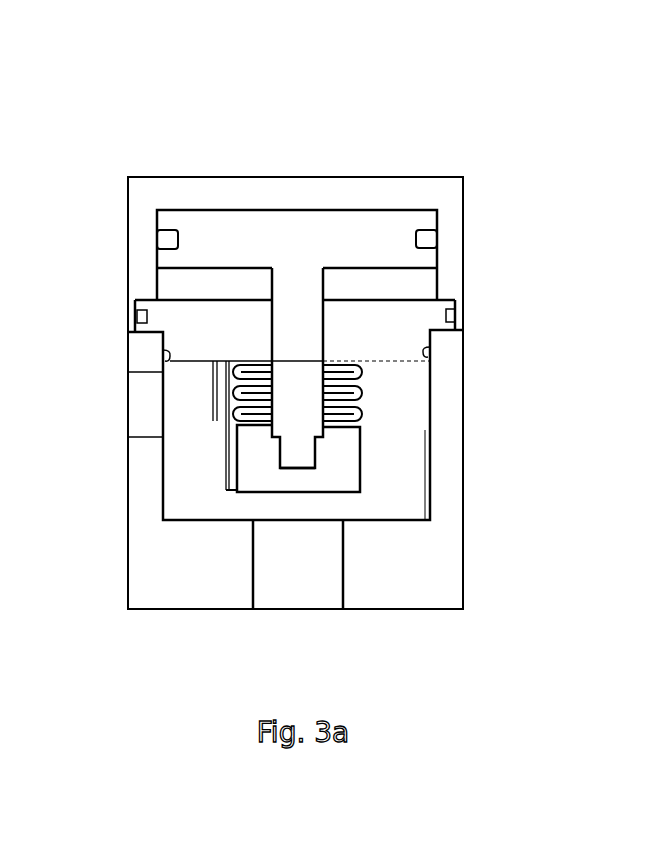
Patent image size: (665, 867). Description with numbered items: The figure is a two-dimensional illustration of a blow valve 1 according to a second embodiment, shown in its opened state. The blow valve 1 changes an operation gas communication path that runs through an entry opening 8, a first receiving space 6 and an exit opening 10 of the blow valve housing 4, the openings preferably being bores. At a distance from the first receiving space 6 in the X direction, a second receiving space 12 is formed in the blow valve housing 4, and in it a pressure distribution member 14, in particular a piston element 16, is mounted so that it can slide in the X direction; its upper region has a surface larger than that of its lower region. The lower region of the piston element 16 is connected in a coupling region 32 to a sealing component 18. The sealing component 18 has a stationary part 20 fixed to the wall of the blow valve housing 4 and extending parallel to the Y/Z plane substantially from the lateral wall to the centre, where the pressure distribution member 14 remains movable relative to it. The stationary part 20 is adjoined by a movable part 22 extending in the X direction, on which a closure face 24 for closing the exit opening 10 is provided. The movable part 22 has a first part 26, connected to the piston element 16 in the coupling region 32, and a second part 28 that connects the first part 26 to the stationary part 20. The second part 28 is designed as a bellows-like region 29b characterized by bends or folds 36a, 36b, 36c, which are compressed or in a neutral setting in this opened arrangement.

The blow valve 1 is at (332, 355).
The blow valve housing 4 is at (337, 392).
The first receiving space 6 is at (493, 490).
The entry opening 8 is at (251, 425).
The exit opening 10 is at (317, 585).
The second receiving space 12 is at (250, 245).
The pressure distribution member 14 is at (340, 205).
The piston element 16 is at (304, 268).
The sealing component 18 is at (295, 206).
The stationary part 20 is at (249, 313).
The movable part 22 is at (145, 425).
The closure face 24 is at (269, 591).
The first part 26 is at (268, 559).
The second part 28 is at (120, 373).
The bellows-like region 29b is at (482, 431).
The coupling region 32 is at (432, 550).
The bend or fold 36a is at (412, 424).
The bend or fold 36b is at (437, 403).
The bend or fold 36c is at (426, 367).